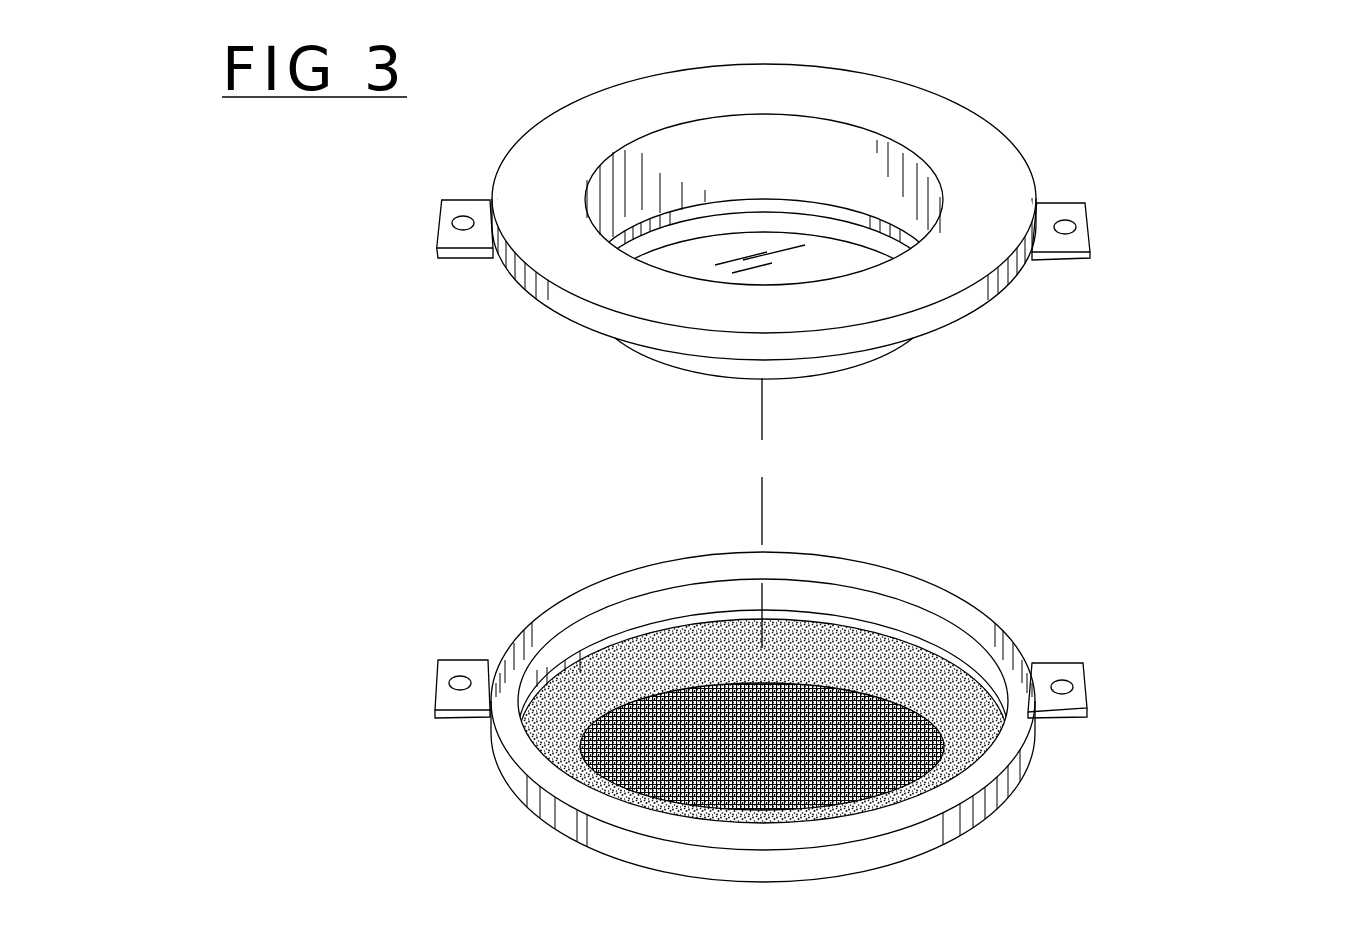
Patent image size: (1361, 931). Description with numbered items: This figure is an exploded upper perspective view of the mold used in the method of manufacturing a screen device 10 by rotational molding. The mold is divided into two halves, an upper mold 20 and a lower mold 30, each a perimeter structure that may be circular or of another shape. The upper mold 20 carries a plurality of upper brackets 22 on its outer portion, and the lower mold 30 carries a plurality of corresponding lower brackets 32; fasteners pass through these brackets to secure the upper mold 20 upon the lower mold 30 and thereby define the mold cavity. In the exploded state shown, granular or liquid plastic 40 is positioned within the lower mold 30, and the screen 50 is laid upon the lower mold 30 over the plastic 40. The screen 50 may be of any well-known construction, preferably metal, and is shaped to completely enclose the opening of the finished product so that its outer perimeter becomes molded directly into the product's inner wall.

The screen device 10 is at (1153, 148).
The upper mold 20 is at (582, 318).
The upper brackets 22 is at (450, 233).
The lower mold 30 is at (948, 595).
The lower brackets 32 is at (445, 695).
The plastic 40 is at (523, 730).
The screen 50 is at (880, 773).